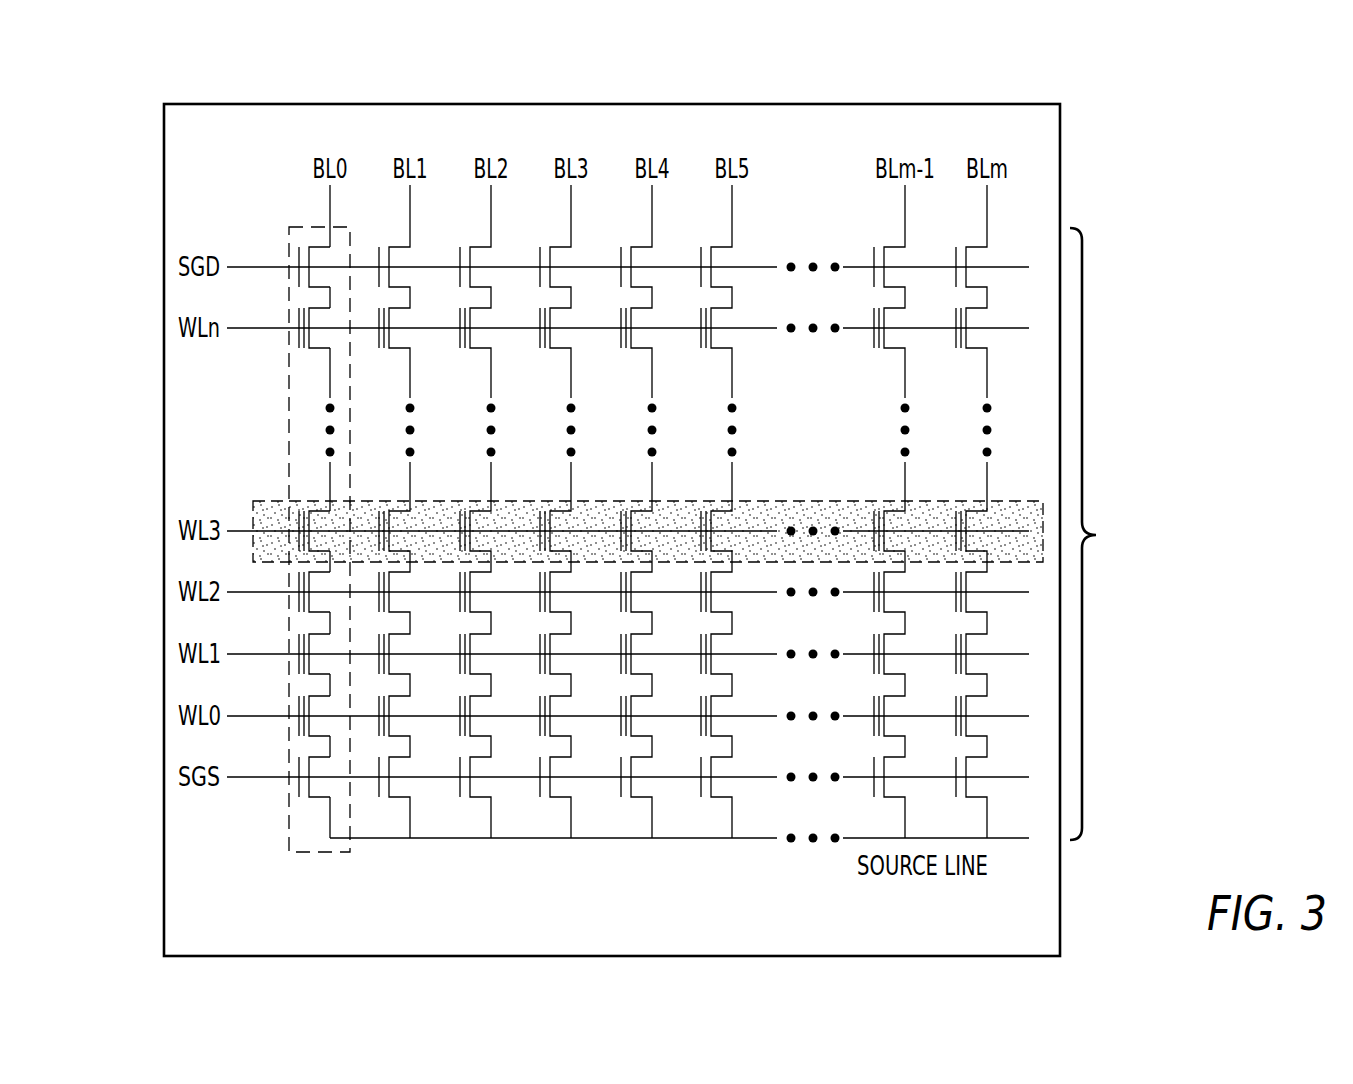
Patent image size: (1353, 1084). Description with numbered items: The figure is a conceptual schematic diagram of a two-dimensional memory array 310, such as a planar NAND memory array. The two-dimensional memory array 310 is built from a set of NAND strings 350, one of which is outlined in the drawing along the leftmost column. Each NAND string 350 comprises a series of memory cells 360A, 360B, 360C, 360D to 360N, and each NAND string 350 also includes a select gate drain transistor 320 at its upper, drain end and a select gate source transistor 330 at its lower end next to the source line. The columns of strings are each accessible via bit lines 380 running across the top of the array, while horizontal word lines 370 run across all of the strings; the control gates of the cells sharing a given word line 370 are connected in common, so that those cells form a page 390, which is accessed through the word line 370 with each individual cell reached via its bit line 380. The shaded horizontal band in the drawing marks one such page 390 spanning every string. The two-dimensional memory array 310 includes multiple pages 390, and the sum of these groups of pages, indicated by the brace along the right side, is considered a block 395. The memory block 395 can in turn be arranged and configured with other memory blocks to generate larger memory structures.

The two-dimensional memory array 310 is at (640, 104).
The select gate drain transistor 320 is at (332, 258).
The select gate source transistor 330 is at (327, 785).
The NAND string 350 is at (332, 853).
The memory cell 360A is at (305, 707).
The memory cell 360B is at (305, 643).
The memory cell 360C is at (305, 583).
The memory cell 360D is at (305, 518).
The memory cell 360N is at (302, 333).
The word line 370 is at (196, 731).
The bit line 380 is at (307, 170).
The page 390 is at (1010, 500).
The block 395 is at (1106, 534).